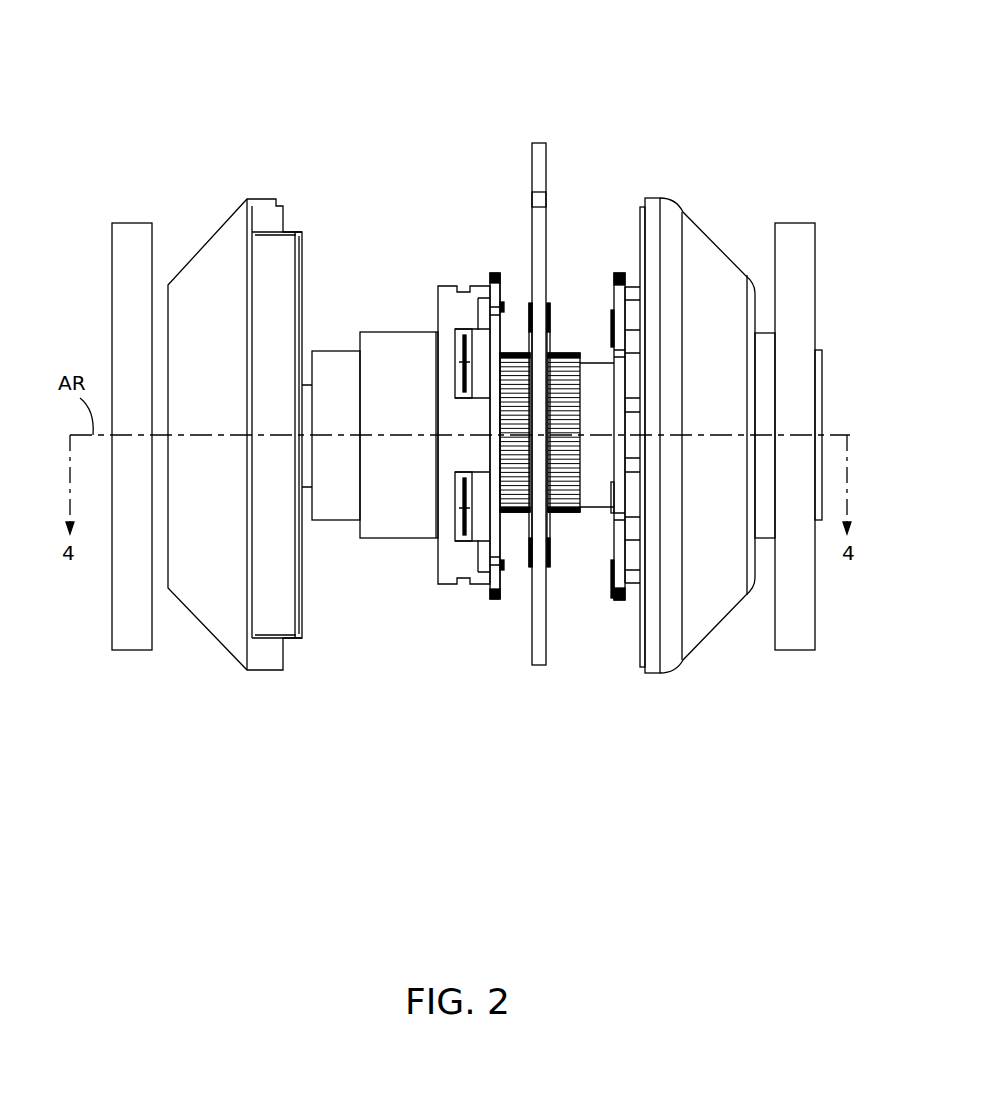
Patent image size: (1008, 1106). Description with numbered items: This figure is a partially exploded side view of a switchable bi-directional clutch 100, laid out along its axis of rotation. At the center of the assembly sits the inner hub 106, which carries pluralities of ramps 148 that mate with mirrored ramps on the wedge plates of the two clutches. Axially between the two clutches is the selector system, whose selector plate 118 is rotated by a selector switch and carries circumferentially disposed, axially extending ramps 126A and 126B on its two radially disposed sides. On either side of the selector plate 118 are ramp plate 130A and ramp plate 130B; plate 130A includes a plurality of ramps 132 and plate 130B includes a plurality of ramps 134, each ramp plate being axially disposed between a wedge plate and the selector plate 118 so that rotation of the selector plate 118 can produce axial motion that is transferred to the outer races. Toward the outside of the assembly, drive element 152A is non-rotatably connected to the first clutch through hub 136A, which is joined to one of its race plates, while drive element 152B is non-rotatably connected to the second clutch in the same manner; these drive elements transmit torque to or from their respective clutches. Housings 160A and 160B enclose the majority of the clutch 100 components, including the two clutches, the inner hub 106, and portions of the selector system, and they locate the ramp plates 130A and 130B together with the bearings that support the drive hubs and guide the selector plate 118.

The switchable bi-directional clutch 100 is at (355, 118).
The inner hub 106 is at (520, 345).
The selector plate 118 is at (540, 143).
The ramps 126A is at (515, 340).
The ramps 126B is at (553, 315).
The ramp plate 130A is at (496, 600).
The ramp plate 130B is at (617, 600).
The ramps 132 is at (513, 345).
The ramps 134 is at (612, 310).
The hub 136A is at (447, 285).
The ramps 148 is at (512, 515).
The drive element 152A is at (133, 222).
The drive element 152B is at (795, 222).
The housing 160A is at (206, 240).
The housing 160B is at (712, 242).